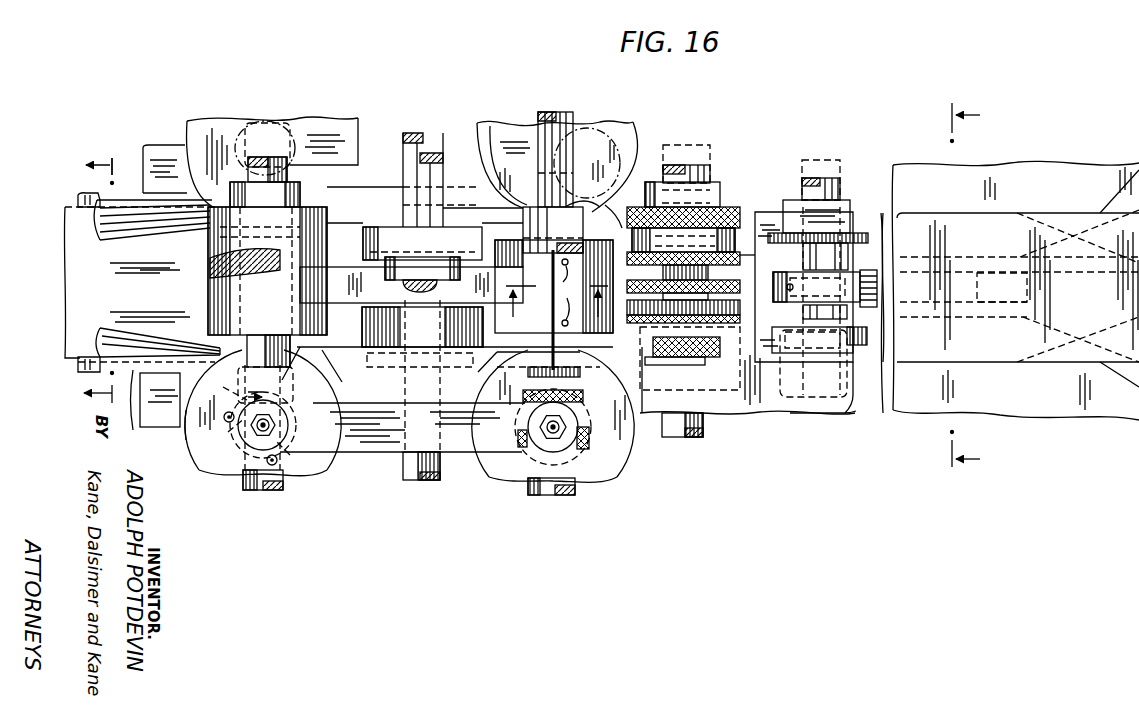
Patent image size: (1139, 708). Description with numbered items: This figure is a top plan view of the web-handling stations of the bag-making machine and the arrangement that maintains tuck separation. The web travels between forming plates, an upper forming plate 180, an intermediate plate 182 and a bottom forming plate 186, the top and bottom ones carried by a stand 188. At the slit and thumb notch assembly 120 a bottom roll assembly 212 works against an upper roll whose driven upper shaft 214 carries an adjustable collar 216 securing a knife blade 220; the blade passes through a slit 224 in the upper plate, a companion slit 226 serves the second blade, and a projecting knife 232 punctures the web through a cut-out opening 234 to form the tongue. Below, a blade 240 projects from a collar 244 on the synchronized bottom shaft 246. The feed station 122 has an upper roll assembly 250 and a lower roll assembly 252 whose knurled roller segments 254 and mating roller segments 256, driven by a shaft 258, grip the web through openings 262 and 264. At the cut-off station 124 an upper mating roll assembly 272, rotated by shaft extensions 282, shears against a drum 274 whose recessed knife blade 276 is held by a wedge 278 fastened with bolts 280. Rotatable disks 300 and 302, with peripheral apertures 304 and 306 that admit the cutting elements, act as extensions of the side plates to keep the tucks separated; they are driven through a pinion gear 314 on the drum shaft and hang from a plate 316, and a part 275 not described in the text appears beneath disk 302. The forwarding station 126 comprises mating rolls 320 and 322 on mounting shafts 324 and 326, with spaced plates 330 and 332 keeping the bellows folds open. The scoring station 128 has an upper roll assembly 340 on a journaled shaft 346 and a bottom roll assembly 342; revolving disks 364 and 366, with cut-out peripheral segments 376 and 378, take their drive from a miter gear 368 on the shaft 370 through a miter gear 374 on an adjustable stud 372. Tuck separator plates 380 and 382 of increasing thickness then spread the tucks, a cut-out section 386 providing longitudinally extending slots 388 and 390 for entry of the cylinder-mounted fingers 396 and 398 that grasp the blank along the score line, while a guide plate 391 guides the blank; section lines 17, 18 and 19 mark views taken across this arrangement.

The section line 17- 17 is at (950, 288).
The section line 18- 18 is at (85, 287).
The section line 19- 19 is at (557, 309).
The slit and thumb notch assembly 120 is at (817, 444).
The feed station 122 is at (700, 461).
The cut-off station 124 is at (547, 511).
The forwarding station 126 is at (412, 501).
The scoring station 128 is at (308, 488).
The upper forming plate 180 is at (986, 360).
The intermediate plate 182 is at (1028, 170).
The bottom forming plate 186 is at (895, 258).
The stand 188 is at (1023, 293).
The bottom roll assembly 212 is at (793, 376).
The upper shaft 214 is at (818, 180).
The adjustable collar 216 is at (840, 188).
The knife blade 220 is at (868, 215).
The slit 224 is at (789, 244).
The slit 226 is at (821, 333).
The projecting knife 232 is at (875, 300).
The cut-out opening 234 is at (803, 270).
The blade 240 is at (853, 392).
The collar 244 is at (853, 412).
The bottom shaft 246 is at (813, 405).
The upper roll assembly 250 is at (742, 213).
The lower roll assembly 252 is at (743, 301).
The knurled roller segments 254 is at (721, 205).
The mating roller segments 256 is at (697, 325).
The driven shaft 258 is at (692, 166).
The opening 262 is at (708, 183).
The opening 264 is at (709, 370).
The upper mating roll assembly 272 is at (521, 206).
The drum 274 is at (581, 198).
The stub shaft 275 is at (573, 488).
The knife blade 276 is at (560, 255).
The wedge 278 is at (571, 262).
The bolts 280 is at (567, 310).
The shaft extensions 282 is at (557, 113).
The rotatable disk 300 is at (606, 122).
The rotatable disk 302 is at (623, 467).
The aperture 304 is at (588, 163).
The aperture 306 is at (557, 353).
The pinion gear 314 is at (584, 400).
The plate 316 is at (462, 457).
The upper roll 320 is at (363, 232).
The mating roll 322 is at (410, 343).
The mounting shaft 324 is at (421, 163).
The mounting shaft 326 is at (405, 474).
The spaced plate 330 is at (370, 187).
The spaced plate 332 is at (333, 351).
The upper roll assembly 340 is at (303, 196).
The bottom roll assembly 342 is at (205, 293).
The journaled shaft 346 is at (260, 272).
The revolving disk 364 is at (207, 121).
The revolving disk 366 is at (205, 470).
The miter gear 368 is at (236, 434).
The shaft 370 is at (265, 492).
The adjustable stud 372 is at (275, 432).
The miter gear 374 is at (237, 395).
The cut-out peripheral segment 376 is at (328, 136).
The cut-out peripheral segment 378 is at (343, 408).
The tuck separator plate 380 is at (188, 194).
The tuck separator plate 382 is at (173, 430).
The cut-out section 386 is at (152, 409).
The longitudinally extending slot 388 is at (146, 224).
The longitudinally extending slot 390 is at (107, 326).
The guide plate 391 is at (72, 269).
The cylinder-mounted finger 396 is at (78, 200).
The cylinder-mounted finger 398 is at (80, 376).